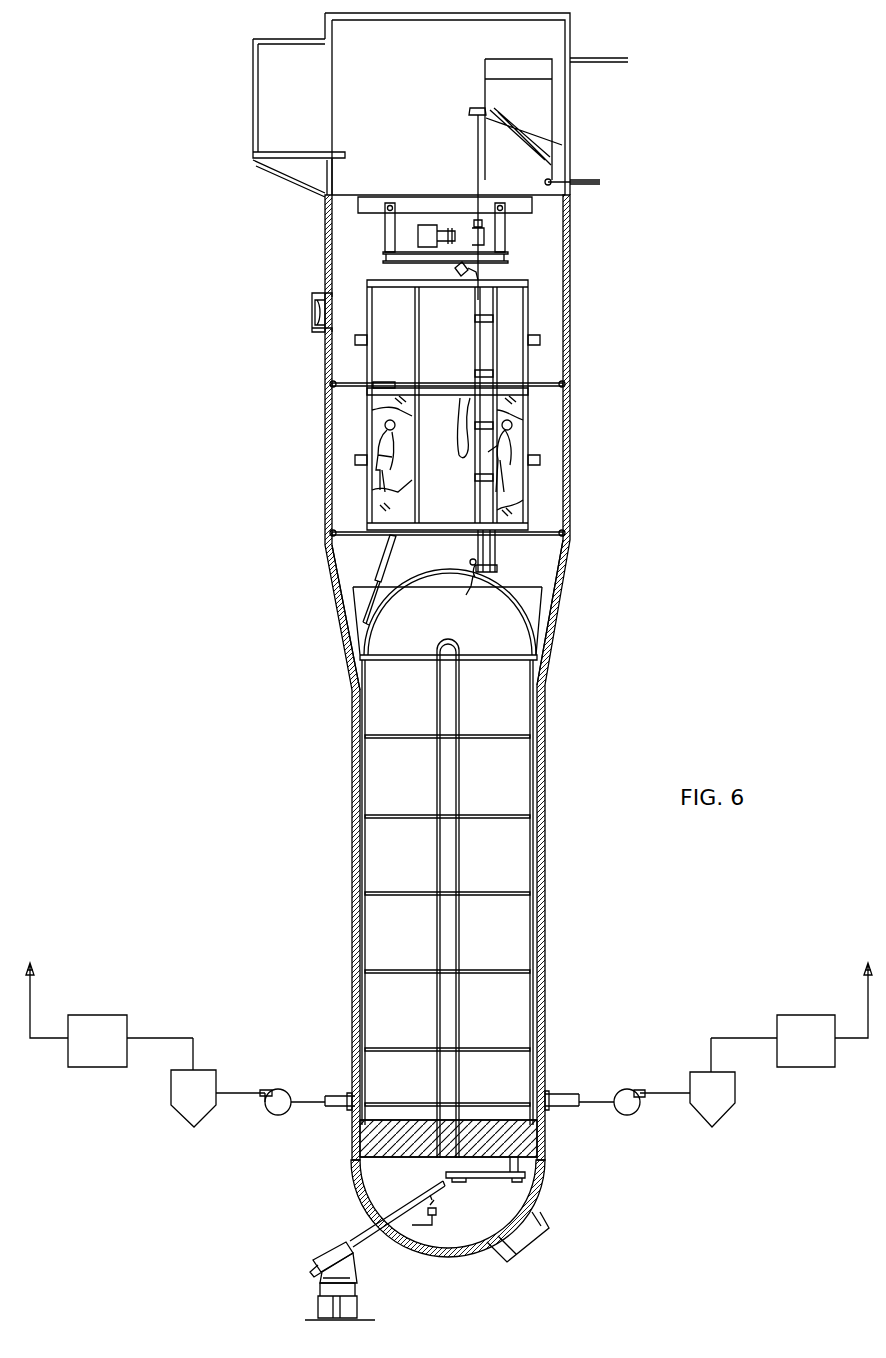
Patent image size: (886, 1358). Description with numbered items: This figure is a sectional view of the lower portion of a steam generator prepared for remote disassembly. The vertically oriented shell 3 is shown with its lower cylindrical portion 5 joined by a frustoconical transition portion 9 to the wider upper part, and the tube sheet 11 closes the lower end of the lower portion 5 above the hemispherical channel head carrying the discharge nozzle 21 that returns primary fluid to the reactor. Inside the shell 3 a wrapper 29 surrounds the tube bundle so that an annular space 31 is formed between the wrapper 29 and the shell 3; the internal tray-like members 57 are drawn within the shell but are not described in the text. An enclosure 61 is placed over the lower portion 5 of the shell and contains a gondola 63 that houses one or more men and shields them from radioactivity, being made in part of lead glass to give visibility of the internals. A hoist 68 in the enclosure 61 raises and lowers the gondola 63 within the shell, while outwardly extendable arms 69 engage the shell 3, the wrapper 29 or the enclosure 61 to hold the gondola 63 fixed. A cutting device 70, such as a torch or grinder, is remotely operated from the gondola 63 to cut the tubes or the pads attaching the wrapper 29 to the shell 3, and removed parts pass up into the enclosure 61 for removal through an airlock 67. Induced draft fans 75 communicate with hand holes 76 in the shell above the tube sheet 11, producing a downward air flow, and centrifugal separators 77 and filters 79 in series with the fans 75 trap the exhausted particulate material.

The shell 3 is at (546, 862).
The lower cylindrical portion 5 is at (546, 765).
The frustoconical transition portion 9 is at (553, 598).
The tube sheet 11 is at (392, 1175).
The discharge nozzle 21 is at (548, 1230).
The wrapper 29 is at (352, 640).
The annular space 31 is at (356, 603).
The trays and central pipe 57 is at (355, 660).
The enclosure 61 is at (572, 30).
The gondola 63 is at (528, 446).
The airlock 67 is at (530, 103).
The hoist 68 is at (444, 232).
The arms 69 is at (348, 382).
The cutting device 70 is at (378, 560).
The induced draft fans 75 is at (282, 1090).
The hand holes 76 is at (352, 1110).
The centrifugal separators 77 is at (205, 1083).
The filters 79 is at (95, 1028).